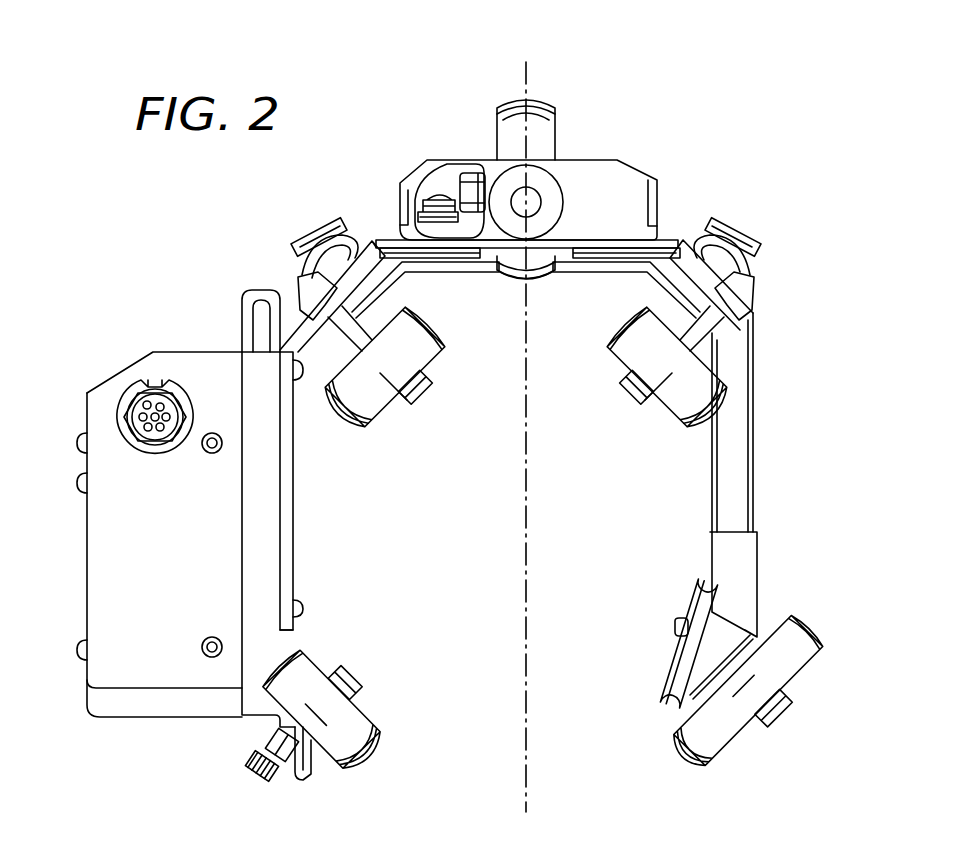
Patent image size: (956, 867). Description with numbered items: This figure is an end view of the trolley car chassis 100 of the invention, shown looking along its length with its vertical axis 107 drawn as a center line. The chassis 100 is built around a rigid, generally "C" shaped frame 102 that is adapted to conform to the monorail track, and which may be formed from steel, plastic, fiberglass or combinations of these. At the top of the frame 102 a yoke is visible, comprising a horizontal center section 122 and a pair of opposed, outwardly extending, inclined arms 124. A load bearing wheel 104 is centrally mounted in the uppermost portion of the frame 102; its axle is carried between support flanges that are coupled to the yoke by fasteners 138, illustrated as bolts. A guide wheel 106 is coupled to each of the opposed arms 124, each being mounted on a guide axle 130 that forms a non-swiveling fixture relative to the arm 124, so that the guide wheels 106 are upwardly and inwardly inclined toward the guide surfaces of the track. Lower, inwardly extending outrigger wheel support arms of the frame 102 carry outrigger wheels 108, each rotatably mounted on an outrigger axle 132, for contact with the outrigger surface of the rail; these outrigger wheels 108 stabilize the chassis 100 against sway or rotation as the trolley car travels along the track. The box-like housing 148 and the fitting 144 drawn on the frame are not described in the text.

The trolley car chassis 100 is at (658, 99).
The "C" shaped frame 102 is at (756, 424).
The load bearing wheel 104 is at (515, 97).
The guide wheel 106 is at (436, 354).
The vertical axis 107 is at (530, 781).
The outrigger wheel 108 is at (369, 758).
The horizontal center section 122 is at (570, 274).
The inclined arm 124 is at (753, 332).
The guide axle 130 is at (424, 405).
The outrigger axle 132 is at (254, 782).
The fastener 138 is at (436, 195).
The fitting 144 is at (468, 167).
The control box 148 is at (86, 556).